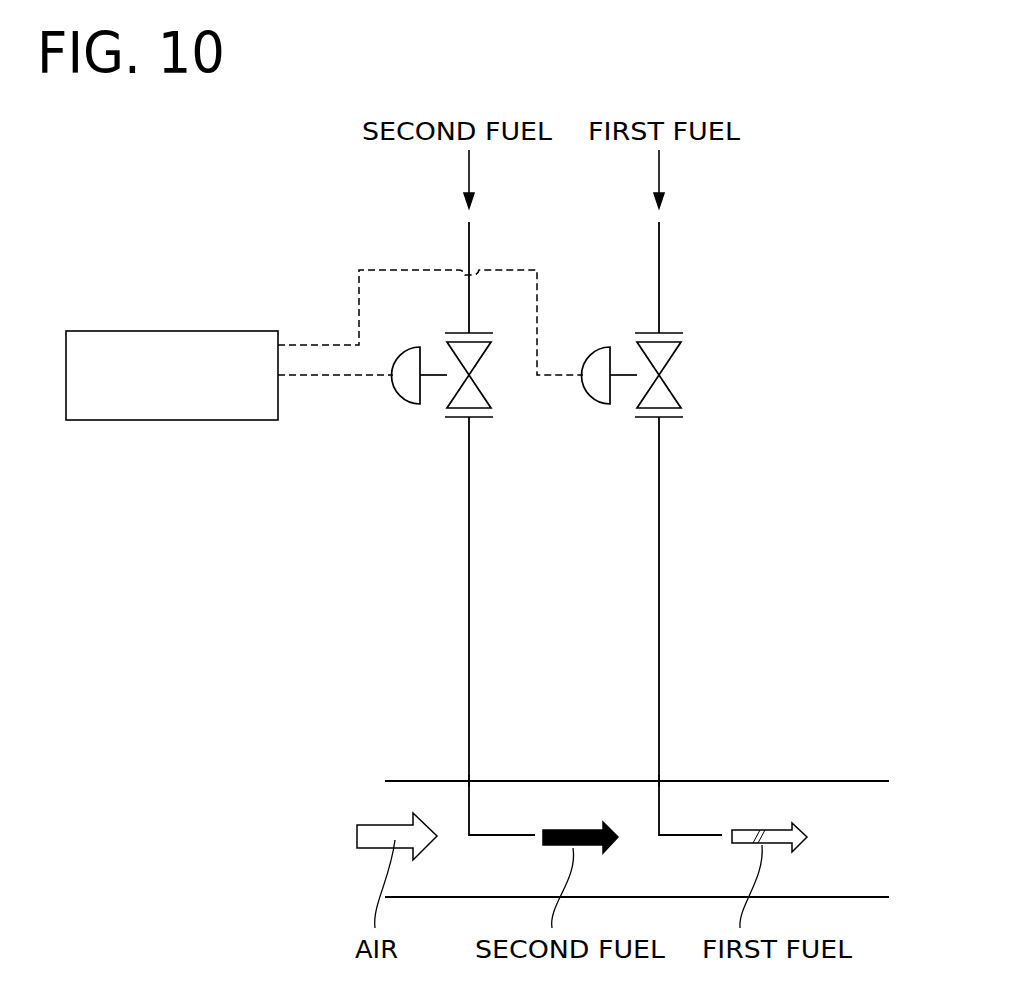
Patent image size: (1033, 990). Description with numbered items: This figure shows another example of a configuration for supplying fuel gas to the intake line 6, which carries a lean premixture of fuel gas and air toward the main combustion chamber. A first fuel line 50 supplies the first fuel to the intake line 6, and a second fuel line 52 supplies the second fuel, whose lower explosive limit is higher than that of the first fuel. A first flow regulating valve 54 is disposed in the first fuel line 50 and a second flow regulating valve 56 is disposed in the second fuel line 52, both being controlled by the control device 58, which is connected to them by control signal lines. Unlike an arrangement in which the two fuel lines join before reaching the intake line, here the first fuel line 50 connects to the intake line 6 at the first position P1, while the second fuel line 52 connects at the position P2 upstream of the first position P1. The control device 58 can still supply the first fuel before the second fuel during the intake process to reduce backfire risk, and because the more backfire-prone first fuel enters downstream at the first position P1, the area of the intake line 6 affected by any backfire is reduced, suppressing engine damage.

The intake line 6 is at (813, 781).
The first fuel line 50 is at (659, 255).
The second fuel line 52 is at (469, 242).
The first flow regulating valve 54 is at (584, 394).
The second flow regulating valve 56 is at (393, 396).
The control device 58 is at (200, 331).
The first position P1 is at (662, 781).
The position P2 is at (472, 781).